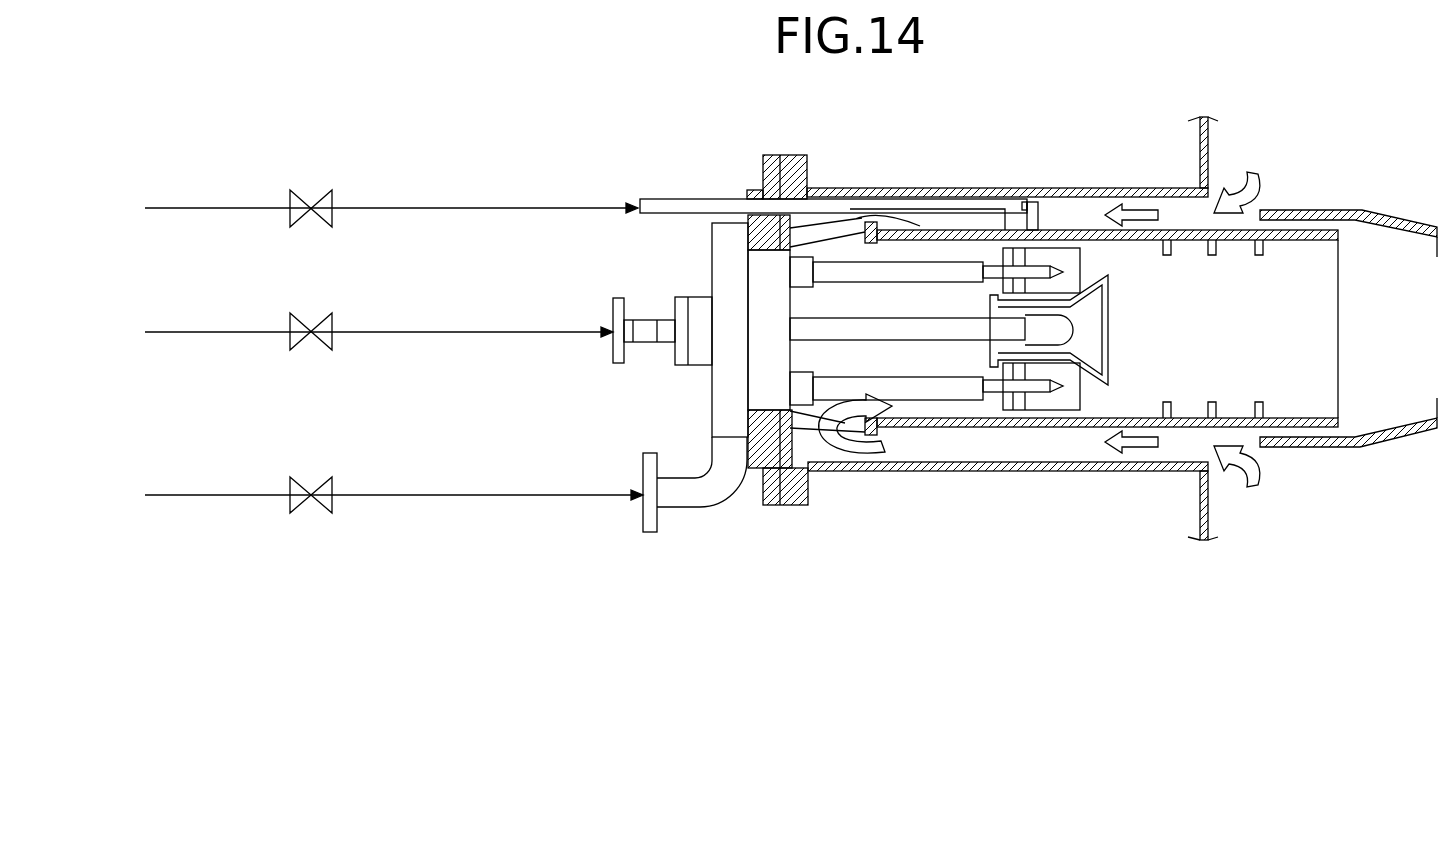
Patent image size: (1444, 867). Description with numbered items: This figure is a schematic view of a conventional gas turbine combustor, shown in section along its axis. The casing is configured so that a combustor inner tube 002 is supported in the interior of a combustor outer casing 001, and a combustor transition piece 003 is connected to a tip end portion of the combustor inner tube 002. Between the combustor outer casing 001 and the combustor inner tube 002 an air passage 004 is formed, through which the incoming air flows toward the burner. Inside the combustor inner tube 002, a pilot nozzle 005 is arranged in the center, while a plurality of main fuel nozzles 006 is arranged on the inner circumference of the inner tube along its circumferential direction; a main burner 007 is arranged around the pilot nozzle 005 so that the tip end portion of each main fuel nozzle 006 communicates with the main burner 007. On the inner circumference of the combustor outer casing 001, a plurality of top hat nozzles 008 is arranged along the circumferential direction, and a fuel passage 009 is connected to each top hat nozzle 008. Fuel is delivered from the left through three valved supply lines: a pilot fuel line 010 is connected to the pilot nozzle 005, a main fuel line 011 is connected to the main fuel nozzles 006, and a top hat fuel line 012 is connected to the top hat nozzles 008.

The combustor outer casing 001 is at (1054, 188).
The combustor inner tube 002 is at (1097, 228).
The combustor transition piece 003 is at (1338, 210).
The air passage 004 is at (972, 222).
The pilot nozzle 005 is at (935, 330).
The main fuel nozzle 006 is at (950, 385).
The main burner 007 is at (1085, 263).
The top hat nozzle 008 is at (1029, 212).
The fuel passage 009 is at (853, 215).
The pilot fuel line 010 is at (415, 330).
The main fuel line 011 is at (415, 494).
The top hat fuel line 012 is at (418, 207).